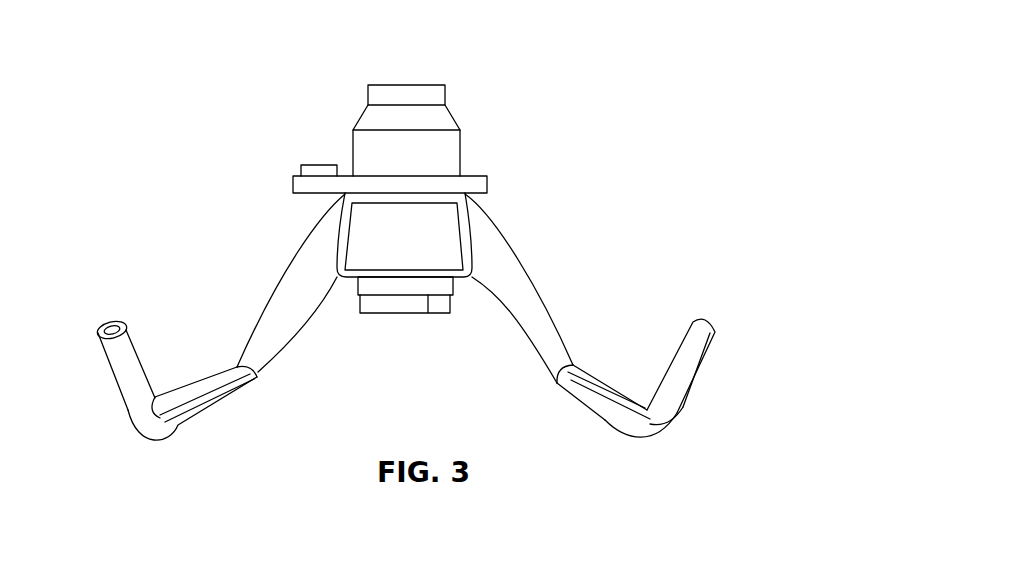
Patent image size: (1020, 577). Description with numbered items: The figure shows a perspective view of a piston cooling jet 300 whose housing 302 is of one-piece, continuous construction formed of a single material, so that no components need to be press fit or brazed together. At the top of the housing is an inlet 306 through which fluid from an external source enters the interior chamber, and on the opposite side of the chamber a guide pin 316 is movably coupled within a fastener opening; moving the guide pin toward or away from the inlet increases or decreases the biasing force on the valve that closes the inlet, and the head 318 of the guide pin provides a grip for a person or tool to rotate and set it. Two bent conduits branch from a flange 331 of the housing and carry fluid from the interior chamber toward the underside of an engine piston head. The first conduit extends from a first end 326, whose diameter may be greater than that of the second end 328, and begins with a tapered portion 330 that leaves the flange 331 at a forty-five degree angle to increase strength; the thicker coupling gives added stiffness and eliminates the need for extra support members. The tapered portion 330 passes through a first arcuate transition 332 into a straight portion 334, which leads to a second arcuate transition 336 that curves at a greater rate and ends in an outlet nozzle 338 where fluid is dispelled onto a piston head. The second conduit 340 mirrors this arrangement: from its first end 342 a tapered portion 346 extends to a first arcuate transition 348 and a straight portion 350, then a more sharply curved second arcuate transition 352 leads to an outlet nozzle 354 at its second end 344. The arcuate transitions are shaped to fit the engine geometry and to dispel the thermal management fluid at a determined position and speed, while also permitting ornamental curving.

The piston cooling jet 300 is at (557, 98).
The housing 302 is at (450, 125).
The inlet 306 is at (407, 83).
The guide pin 316 is at (420, 303).
The head 318 is at (373, 303).
The first end 326 is at (482, 210).
The second end 328 is at (693, 327).
The tapered portion 330 is at (502, 250).
The flange 331 is at (473, 182).
The first arcuate transition 332 is at (572, 368).
The straight portion 334 is at (605, 415).
The second arcuate transition 336 is at (650, 430).
The outlet nozzle 338 is at (697, 352).
The second conduit 340 is at (280, 297).
The first end 342 is at (338, 213).
The second end 344 is at (127, 332).
The tapered portion 346 is at (303, 258).
The first arcuate transition 348 is at (258, 370).
The straight portion 350 is at (205, 407).
The second arcuate transition 352 is at (163, 433).
The outlet nozzle 354 is at (123, 370).